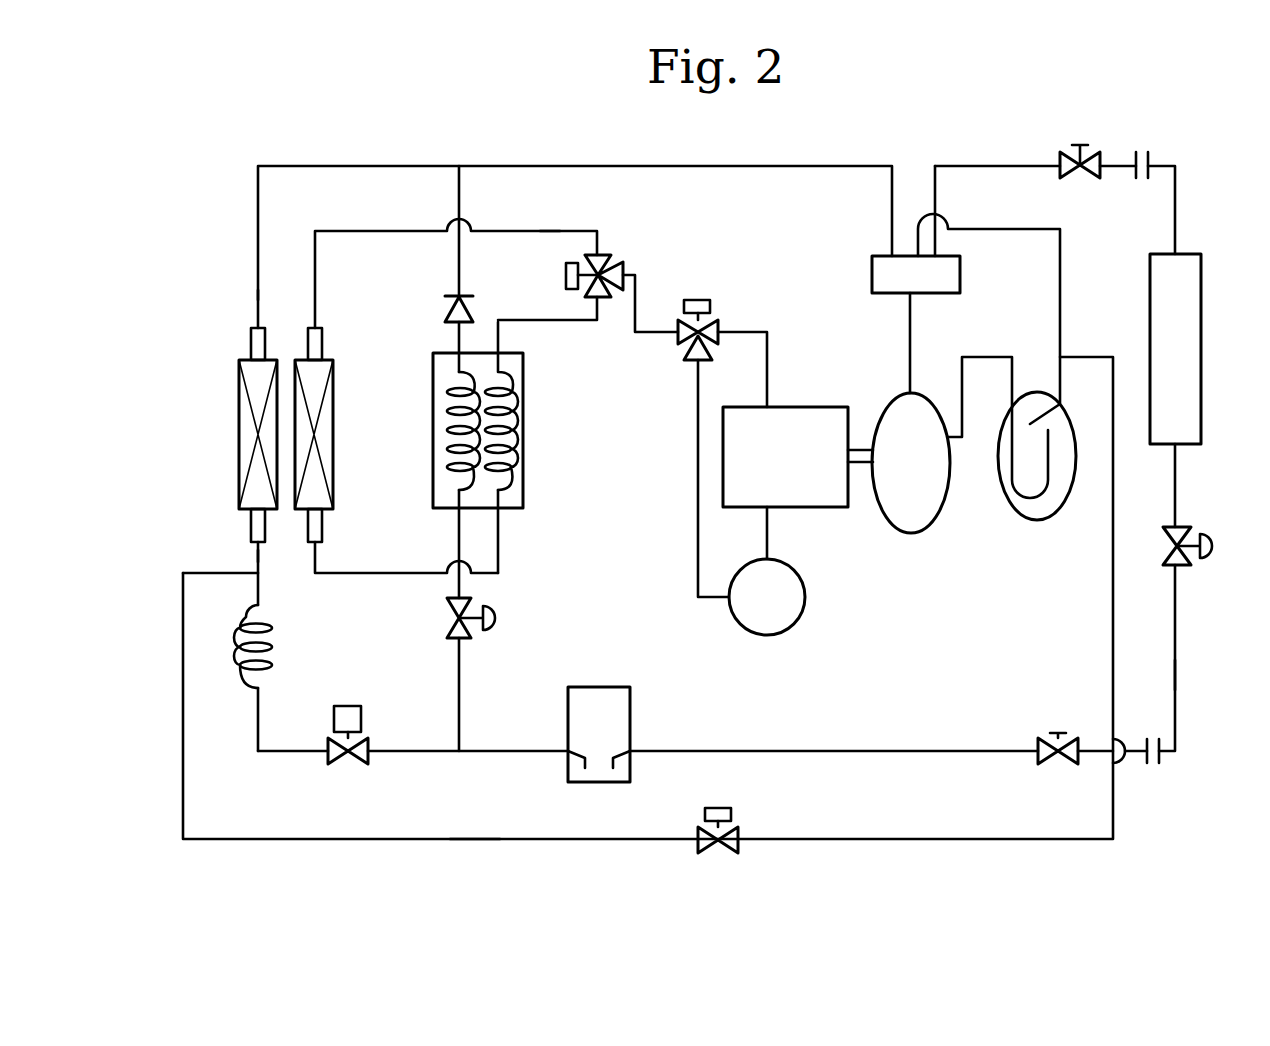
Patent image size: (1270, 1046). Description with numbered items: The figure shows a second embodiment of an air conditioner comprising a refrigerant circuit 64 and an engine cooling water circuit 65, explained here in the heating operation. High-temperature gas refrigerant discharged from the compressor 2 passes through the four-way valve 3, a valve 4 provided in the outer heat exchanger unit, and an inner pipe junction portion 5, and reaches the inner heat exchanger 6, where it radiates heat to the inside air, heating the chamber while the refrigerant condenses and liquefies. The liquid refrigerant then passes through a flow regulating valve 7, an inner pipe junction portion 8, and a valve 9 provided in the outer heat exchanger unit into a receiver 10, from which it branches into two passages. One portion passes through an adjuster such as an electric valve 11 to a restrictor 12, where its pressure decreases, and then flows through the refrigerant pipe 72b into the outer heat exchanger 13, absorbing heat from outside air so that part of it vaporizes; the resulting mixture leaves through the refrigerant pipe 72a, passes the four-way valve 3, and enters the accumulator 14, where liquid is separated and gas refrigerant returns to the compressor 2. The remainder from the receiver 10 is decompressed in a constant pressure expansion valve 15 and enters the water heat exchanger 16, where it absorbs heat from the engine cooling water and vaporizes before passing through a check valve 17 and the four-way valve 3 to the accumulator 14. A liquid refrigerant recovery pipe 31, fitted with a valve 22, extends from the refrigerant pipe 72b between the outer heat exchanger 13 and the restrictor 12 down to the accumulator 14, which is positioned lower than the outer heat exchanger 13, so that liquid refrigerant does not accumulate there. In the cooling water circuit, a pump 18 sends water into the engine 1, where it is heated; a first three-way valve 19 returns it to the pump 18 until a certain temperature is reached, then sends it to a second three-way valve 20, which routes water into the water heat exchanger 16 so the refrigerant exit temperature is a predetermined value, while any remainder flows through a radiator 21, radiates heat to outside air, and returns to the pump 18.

The engine 1 is at (820, 507).
The compressor 2 is at (928, 528).
The four-way valve 3 is at (960, 275).
The valve 4 is at (1070, 178).
The inner pipe junction portion 5 is at (1143, 178).
The inner heat exchanger 6 is at (1201, 360).
The flow regulating valve 7 is at (1207, 546).
The inner pipe junction portion 8 is at (1150, 765).
The valve 9 is at (1040, 738).
The receiver 10 is at (630, 720).
The electric valve 11 is at (352, 756).
The restrictor 12 is at (272, 642).
The outer heat exchanger 13 is at (239, 430).
The accumulator 14 is at (1040, 520).
The constant pressure expansion valve 15 is at (497, 618).
The water heat exchanger 16 is at (523, 440).
The check valve 17 is at (439, 308).
The pump 18 is at (785, 630).
The first three-way valve 19 is at (702, 300).
The second three-way valve 20 is at (612, 263).
The radiator 21 is at (333, 463).
The valve 22 is at (738, 830).
The liquid refrigerant recovery pipe 31 is at (470, 839).
The refrigerant circuit 64 is at (1177, 671).
The engine cooling water circuit 65 is at (553, 232).
The refrigerant pipe 72a is at (258, 296).
The refrigerant pipe 72b is at (258, 556).